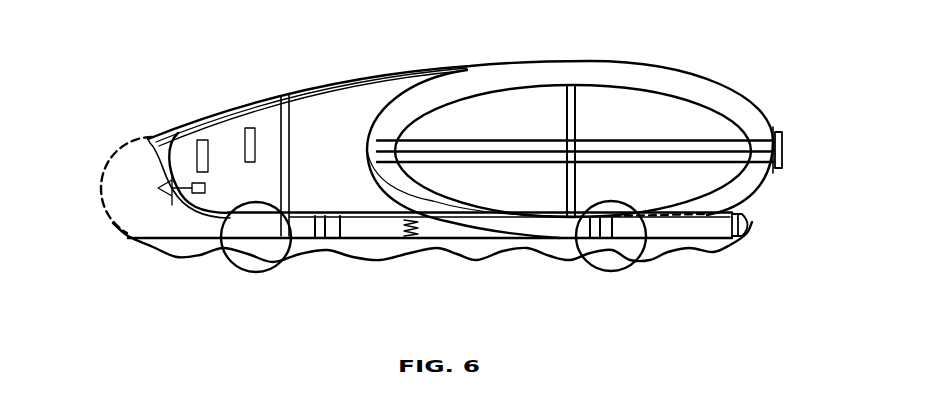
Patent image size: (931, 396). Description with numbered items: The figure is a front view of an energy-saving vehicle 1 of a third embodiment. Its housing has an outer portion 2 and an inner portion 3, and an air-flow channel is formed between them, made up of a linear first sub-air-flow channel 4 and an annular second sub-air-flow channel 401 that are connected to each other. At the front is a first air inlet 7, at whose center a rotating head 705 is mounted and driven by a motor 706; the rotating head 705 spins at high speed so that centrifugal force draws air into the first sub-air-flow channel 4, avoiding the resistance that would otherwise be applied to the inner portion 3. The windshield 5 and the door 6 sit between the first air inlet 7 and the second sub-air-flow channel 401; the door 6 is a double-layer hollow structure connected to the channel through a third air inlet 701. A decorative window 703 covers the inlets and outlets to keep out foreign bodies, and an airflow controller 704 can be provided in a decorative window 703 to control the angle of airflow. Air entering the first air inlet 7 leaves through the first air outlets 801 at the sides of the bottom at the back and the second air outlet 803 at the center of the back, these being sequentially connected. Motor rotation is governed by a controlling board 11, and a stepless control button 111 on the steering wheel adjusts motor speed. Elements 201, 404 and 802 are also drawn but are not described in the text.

The vehicle body 1 is at (513, 118).
The outer portion 2 is at (197, 240).
The inner portion 3 is at (420, 235).
The first sub-air-flow channel 4 is at (470, 222).
The windshield 5 is at (222, 112).
The door 6 is at (390, 105).
The first air inlet 7 is at (103, 183).
The controlling board 11 is at (207, 147).
The stepless control button 111 is at (252, 128).
The spring 201 is at (447, 228).
The second sub-air-flow channel 401 is at (586, 137).
The wheel 404 is at (345, 243).
The third air inlet 701 is at (288, 157).
The decorative window 703 is at (622, 137).
The airflow controller 704 is at (580, 257).
The rotating head 705 is at (163, 183).
The motor 706 is at (198, 193).
The first air outlet 801 is at (752, 224).
The connecting piece 802 is at (773, 128).
The second air outlet 803 is at (782, 138).